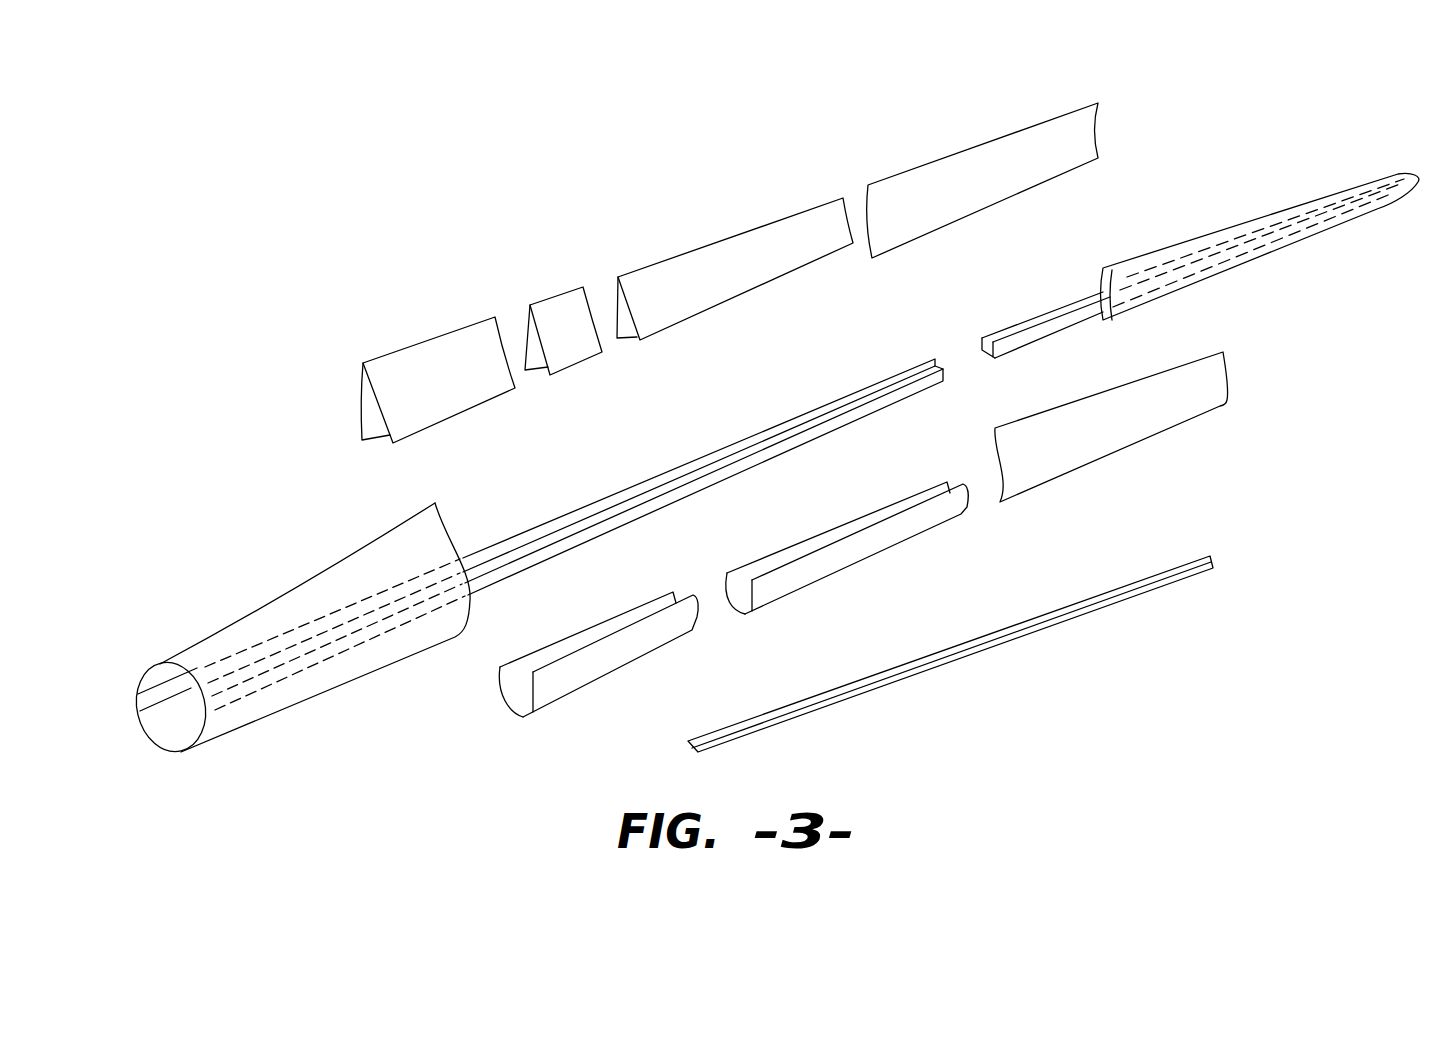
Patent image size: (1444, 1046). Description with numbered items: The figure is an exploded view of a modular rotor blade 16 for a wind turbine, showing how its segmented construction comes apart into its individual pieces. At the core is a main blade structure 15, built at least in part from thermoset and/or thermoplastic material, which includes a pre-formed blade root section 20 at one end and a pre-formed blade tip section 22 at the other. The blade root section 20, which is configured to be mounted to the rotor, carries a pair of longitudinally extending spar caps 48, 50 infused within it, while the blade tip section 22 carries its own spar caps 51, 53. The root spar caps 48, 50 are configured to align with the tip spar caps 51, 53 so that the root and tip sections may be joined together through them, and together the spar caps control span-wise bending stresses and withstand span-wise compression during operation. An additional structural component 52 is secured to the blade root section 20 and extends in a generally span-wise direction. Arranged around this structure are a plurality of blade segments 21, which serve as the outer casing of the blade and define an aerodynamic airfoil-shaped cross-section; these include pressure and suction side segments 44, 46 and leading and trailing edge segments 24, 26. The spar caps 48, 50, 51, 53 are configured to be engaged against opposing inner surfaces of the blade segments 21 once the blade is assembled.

The main blade structure 15 is at (788, 447).
The rotor blade 16 is at (1162, 120).
The blade root section 20 is at (290, 710).
The blade segment 21 is at (393, 347).
The blade tip section 22 is at (1267, 255).
The leading edge segment 24 is at (608, 675).
The trailing edge segment 26 is at (437, 333).
The pressure side segment 44 is at (982, 143).
The suction side segment 46 is at (1117, 450).
The spar cap 48 is at (513, 540).
The spar cap 50 is at (690, 480).
The spar cap 51 is at (980, 333).
The additional structural component 52 is at (1052, 627).
The spar cap 53 is at (1035, 343).